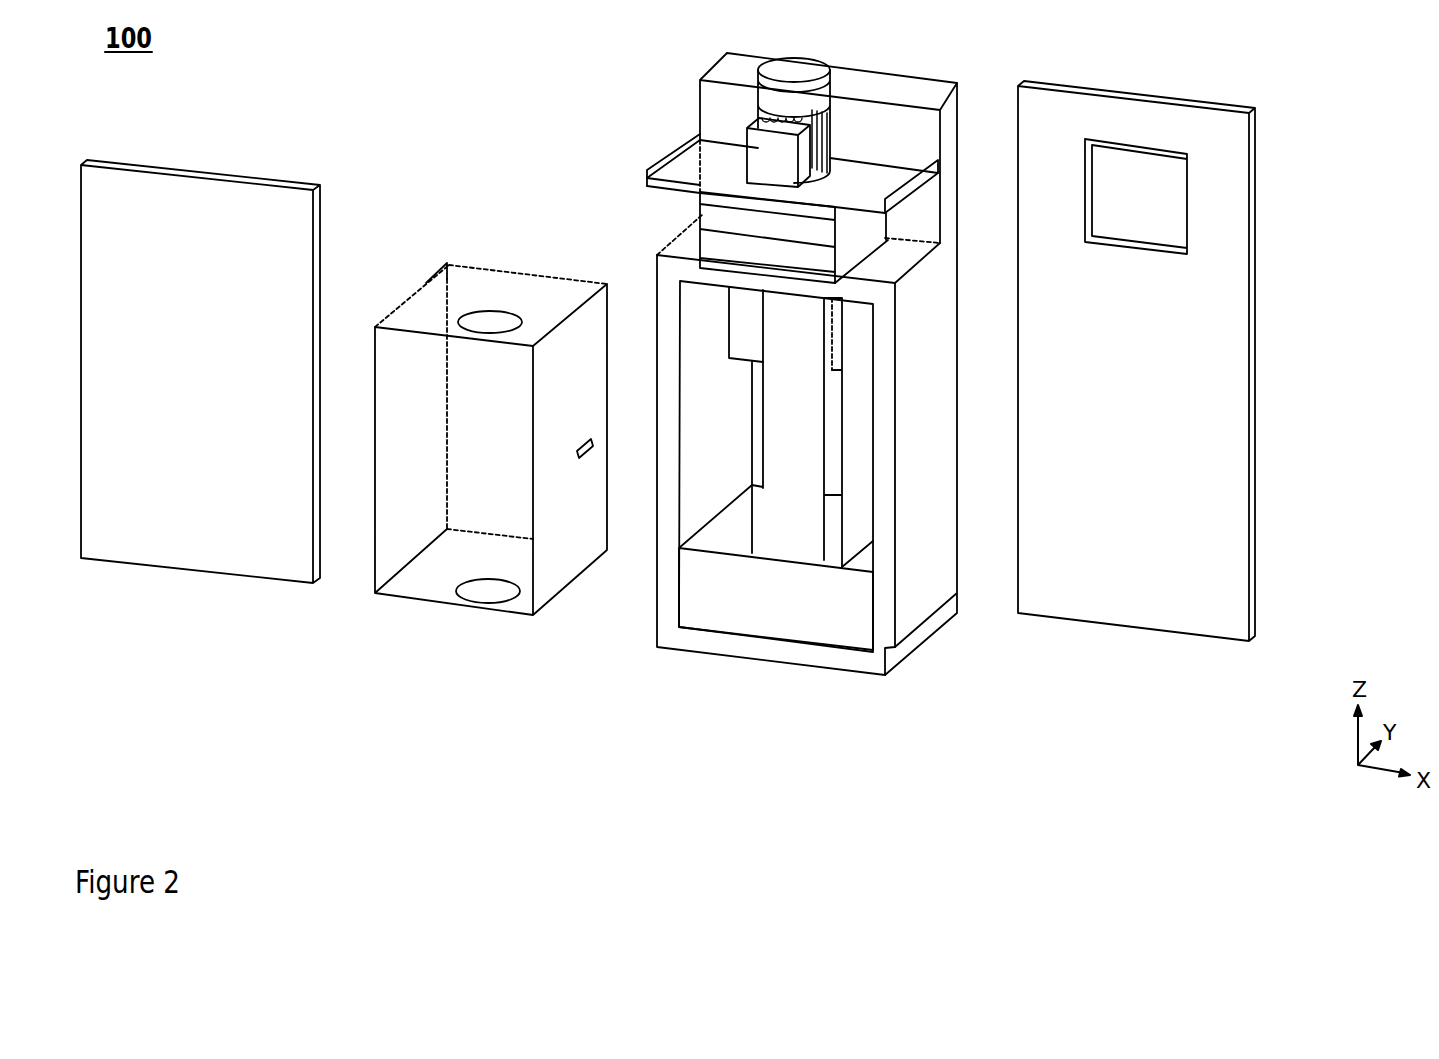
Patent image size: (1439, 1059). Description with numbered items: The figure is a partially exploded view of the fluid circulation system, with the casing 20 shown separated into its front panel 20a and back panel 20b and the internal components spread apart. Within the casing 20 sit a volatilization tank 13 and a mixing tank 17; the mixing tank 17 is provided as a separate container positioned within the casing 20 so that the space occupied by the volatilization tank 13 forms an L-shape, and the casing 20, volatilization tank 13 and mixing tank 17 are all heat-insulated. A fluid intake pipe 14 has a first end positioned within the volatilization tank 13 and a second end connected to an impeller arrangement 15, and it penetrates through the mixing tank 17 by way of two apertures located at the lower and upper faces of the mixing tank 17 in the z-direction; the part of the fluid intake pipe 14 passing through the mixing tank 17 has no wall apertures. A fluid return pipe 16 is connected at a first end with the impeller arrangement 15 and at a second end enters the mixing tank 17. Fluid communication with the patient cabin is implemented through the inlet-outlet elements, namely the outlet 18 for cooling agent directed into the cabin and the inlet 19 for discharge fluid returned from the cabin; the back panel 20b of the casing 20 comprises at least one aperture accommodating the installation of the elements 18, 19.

The volatilization tank 13 is at (766, 622).
The fluid intake pipe 14 is at (785, 407).
The impeller arrangement 15 is at (713, 247).
The fluid return pipe 16 is at (745, 338).
The mixing tank 17 is at (426, 307).
The outlet for a cooling agent 18 is at (1221, 183).
The inlet for discharge fluid 19 is at (1173, 228).
The casing 20 is at (657, 308).
The front panel 20a is at (205, 556).
The back panel 20b is at (1230, 427).